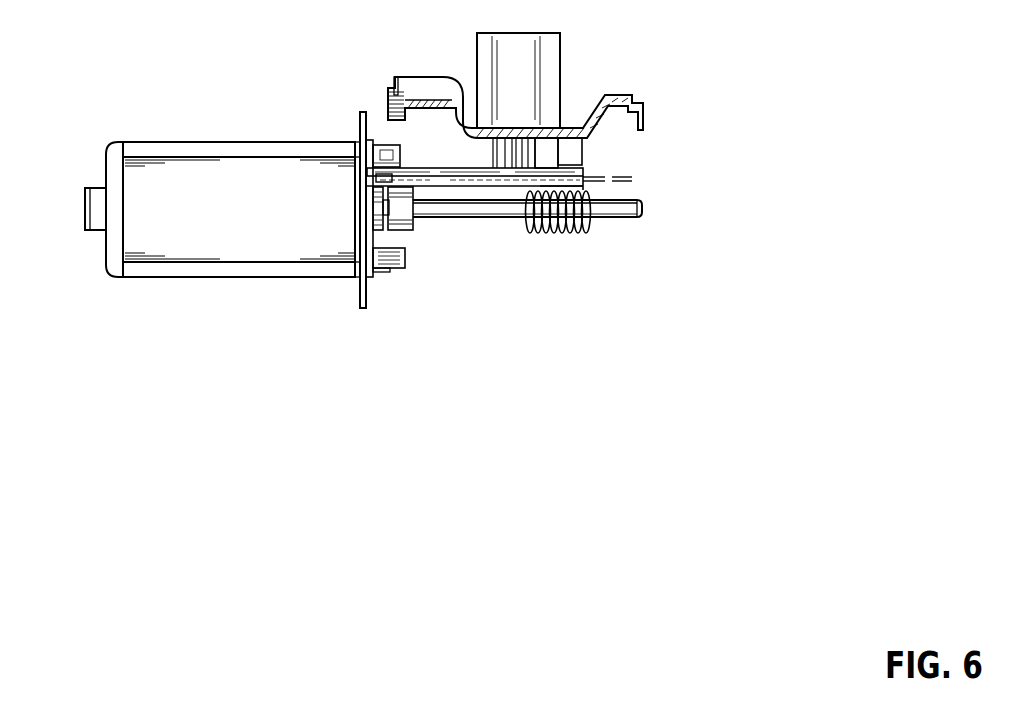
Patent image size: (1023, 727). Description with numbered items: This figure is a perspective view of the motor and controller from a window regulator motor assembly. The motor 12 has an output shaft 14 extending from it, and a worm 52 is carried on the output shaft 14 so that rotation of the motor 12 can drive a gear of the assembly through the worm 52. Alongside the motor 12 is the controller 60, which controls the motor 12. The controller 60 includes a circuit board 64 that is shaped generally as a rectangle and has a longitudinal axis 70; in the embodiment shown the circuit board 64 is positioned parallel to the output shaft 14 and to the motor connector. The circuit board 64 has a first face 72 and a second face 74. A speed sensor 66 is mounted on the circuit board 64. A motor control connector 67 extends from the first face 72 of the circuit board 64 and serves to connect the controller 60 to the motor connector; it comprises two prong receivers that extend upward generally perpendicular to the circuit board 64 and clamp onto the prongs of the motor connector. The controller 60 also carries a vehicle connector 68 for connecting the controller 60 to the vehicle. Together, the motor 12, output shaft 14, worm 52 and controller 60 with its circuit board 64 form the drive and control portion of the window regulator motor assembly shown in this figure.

The motor 12 is at (140, 148).
The output shaft 14 is at (604, 208).
The worm 52 is at (535, 232).
The controller 60 is at (627, 100).
The circuit board 64 is at (585, 172).
The speed sensor 66 is at (384, 182).
The motor control connector 67 is at (392, 158).
The vehicle connector 68 is at (548, 52).
The longitudinal axis 70 is at (613, 180).
The first face 72 is at (565, 167).
The second face 74 is at (583, 184).